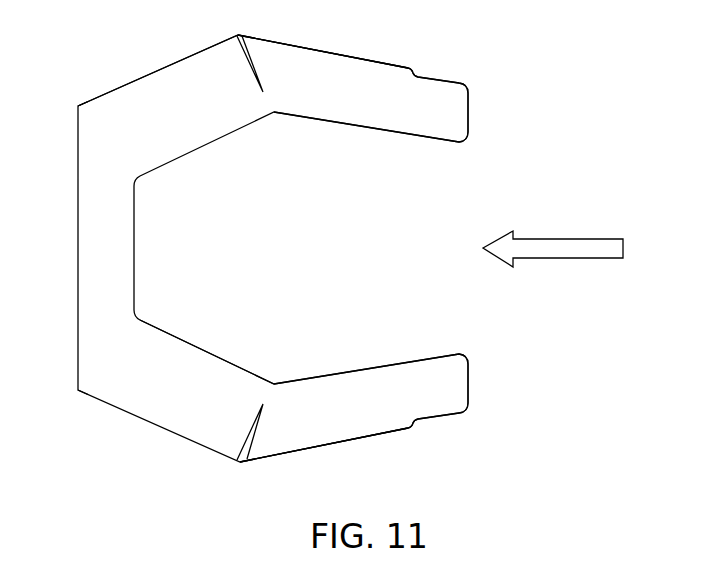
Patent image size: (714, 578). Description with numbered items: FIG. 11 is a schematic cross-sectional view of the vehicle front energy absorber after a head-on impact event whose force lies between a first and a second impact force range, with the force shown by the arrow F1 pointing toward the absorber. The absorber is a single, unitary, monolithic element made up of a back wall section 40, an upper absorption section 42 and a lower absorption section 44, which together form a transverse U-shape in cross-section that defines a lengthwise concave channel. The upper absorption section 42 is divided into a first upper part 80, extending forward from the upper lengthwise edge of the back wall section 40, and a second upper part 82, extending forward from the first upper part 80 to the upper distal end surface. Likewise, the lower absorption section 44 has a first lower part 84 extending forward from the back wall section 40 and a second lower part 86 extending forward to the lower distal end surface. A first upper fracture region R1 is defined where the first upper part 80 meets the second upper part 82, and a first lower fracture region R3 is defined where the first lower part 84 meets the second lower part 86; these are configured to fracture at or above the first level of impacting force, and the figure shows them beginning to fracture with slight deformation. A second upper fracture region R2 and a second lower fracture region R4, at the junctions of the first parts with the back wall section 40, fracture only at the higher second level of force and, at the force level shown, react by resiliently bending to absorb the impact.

The back wall section 40 is at (103, 231).
The upper absorption section 42 is at (348, 95).
The lower absorption section 44 is at (342, 402).
The first upper part 80 is at (176, 85).
The second upper part 82 is at (383, 90).
The first lower part 84 is at (190, 380).
The second lower part 86 is at (383, 402).
The first upper fracture region R1 is at (250, 58).
The second upper fracture region R2 is at (120, 110).
The first lower fracture region R3 is at (250, 437).
The second lower fracture region R4 is at (118, 382).
The arrow indicating impacting force F1 is at (553, 237).